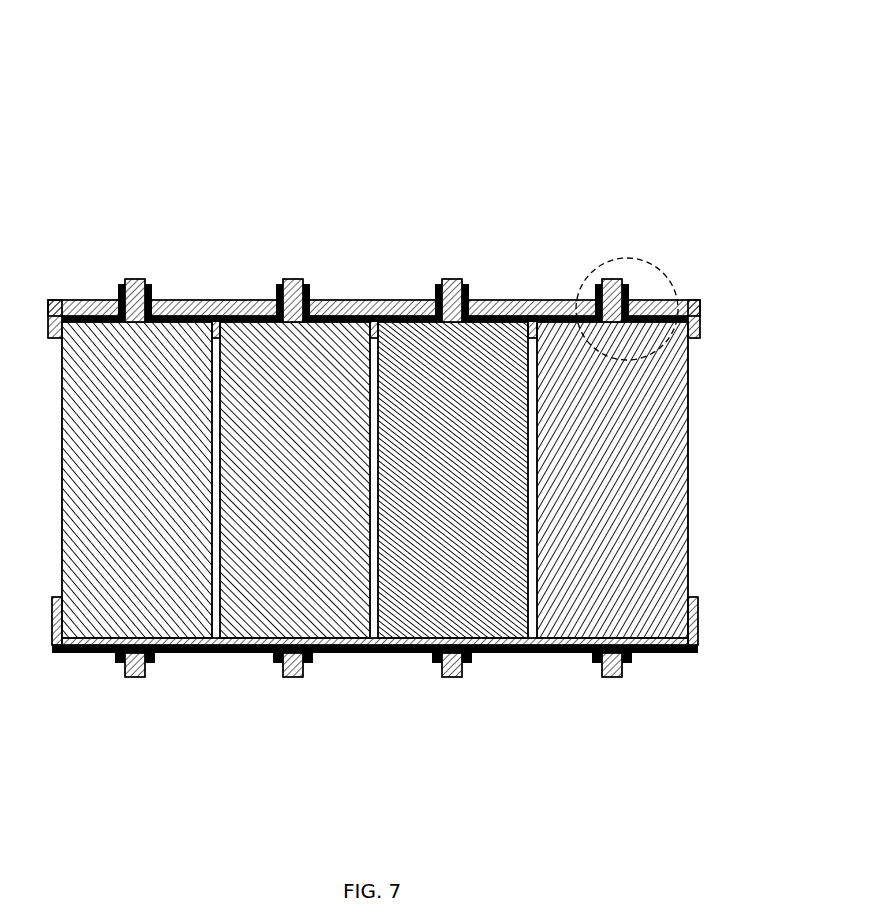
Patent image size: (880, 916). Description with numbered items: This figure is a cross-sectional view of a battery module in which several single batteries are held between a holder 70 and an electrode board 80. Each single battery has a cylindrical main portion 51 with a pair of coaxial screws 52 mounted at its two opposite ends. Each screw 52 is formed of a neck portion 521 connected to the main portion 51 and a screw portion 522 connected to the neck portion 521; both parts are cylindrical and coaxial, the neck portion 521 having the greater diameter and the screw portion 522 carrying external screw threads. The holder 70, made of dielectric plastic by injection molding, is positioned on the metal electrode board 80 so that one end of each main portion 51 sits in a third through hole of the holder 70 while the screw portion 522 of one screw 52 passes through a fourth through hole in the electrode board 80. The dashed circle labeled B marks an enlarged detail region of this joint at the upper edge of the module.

The main portion 51 is at (615, 558).
The screw 52 is at (411, 756).
The neck portion 521 is at (635, 652).
The screw portion 522 is at (630, 664).
The holder 70 is at (62, 645).
The electrode board 80 is at (237, 647).
The detail region B is at (653, 265).